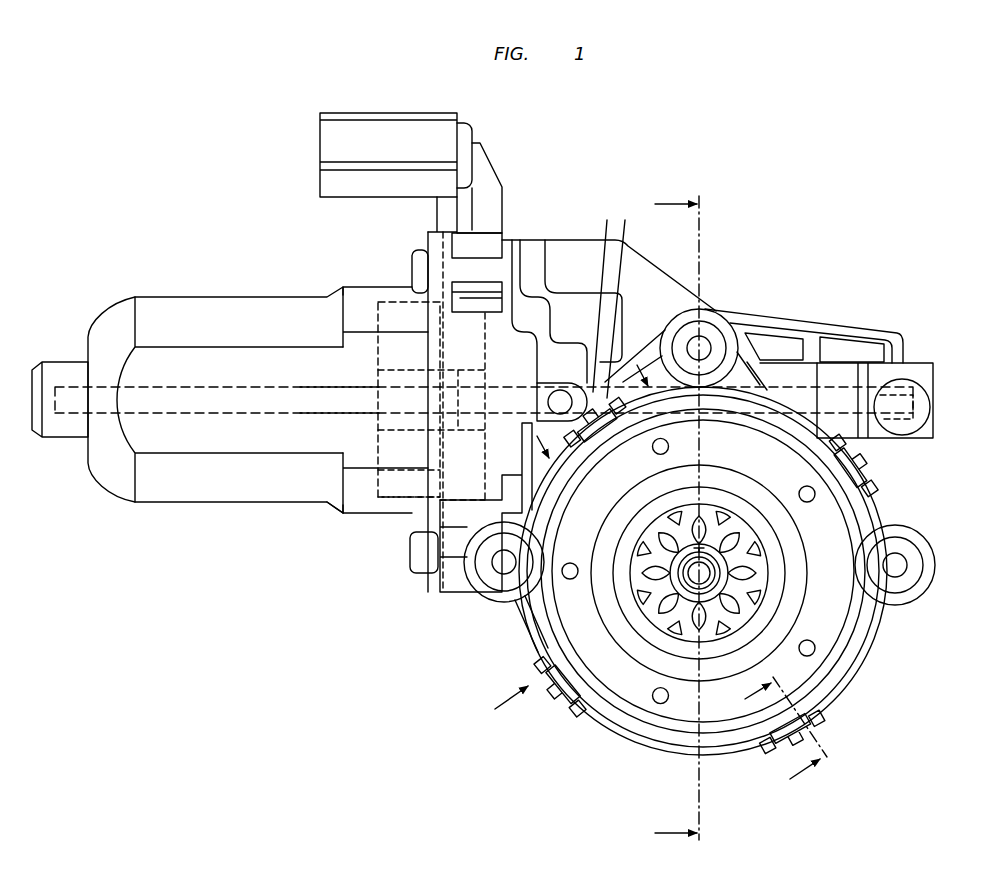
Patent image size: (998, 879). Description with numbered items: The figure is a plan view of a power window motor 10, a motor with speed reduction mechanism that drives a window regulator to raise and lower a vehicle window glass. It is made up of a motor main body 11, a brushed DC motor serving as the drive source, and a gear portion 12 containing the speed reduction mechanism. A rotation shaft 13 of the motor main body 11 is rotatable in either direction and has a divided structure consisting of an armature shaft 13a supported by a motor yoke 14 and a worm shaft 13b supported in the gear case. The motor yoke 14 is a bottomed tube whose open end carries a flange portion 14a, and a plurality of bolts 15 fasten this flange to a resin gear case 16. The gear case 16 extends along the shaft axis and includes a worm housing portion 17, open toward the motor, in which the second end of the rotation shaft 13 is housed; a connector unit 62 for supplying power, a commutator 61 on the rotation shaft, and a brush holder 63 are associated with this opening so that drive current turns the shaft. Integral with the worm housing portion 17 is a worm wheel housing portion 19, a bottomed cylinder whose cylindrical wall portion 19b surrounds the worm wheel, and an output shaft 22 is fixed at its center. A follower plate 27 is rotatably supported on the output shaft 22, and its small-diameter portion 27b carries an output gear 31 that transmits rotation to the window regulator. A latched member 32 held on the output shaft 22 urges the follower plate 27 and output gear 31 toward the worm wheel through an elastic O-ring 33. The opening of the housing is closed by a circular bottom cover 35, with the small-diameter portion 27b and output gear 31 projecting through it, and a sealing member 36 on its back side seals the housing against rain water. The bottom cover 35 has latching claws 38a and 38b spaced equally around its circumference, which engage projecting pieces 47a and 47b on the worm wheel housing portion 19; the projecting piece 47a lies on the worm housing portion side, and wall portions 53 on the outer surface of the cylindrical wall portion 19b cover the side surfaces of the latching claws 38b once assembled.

The power window motor 10 is at (147, 180).
The motor main body 11 is at (114, 300).
The gear portion 12 is at (773, 268).
The rotation shaft 13 is at (170, 382).
The armature shaft 13a is at (201, 400).
The worm shaft 13b is at (846, 392).
The motor yoke 14 is at (248, 308).
The flange portion 14a is at (347, 531).
The bolts 15 is at (418, 262).
The gear case 16 is at (588, 238).
The worm housing portion 17 is at (562, 258).
The worm wheel housing portion 19 is at (846, 676).
The cylindrical wall portion 19b is at (868, 651).
The output shaft 22 is at (702, 557).
The follower plate 27 is at (625, 571).
The small-diameter portion 27b is at (720, 592).
The output gear 31 is at (742, 568).
The latched member 32 is at (936, 568).
The O-ring 33 is at (722, 593).
The bottom cover 35 is at (626, 700).
The sealing member 36 is at (717, 652).
The latching claw 38a is at (621, 250).
The latching claw 38b is at (546, 699).
The projecting piece 47a is at (588, 232).
The projecting piece 47b is at (547, 678).
The wall portion 53 is at (525, 644).
The commutator 61 is at (376, 302).
The connector unit 62 is at (476, 143).
The brush holder 63 is at (323, 507).